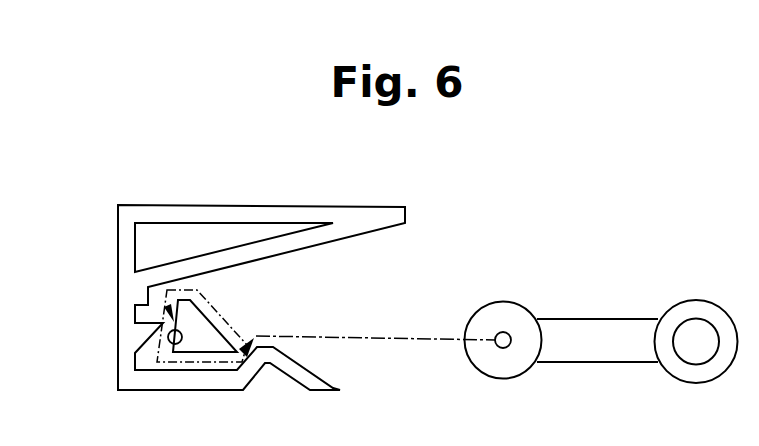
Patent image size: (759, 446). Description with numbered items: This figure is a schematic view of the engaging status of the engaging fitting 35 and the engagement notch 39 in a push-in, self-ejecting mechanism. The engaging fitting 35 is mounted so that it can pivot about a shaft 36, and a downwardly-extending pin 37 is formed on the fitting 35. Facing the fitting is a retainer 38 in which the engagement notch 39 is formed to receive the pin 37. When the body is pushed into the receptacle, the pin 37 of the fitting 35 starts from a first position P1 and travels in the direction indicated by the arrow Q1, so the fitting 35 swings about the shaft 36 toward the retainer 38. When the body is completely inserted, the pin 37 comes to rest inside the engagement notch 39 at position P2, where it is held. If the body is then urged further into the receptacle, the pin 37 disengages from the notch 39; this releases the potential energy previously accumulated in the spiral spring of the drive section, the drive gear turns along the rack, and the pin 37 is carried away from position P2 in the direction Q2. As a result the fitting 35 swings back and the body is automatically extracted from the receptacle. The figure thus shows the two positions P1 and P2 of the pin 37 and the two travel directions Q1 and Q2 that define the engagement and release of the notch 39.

The engaging fitting 35 is at (593, 318).
The shaft 36 is at (690, 317).
The pin 37 is at (502, 333).
The retainer 38 is at (277, 207).
The engagement notch 39 is at (138, 312).
The first position P1 is at (503, 377).
The position P2 is at (182, 342).
The direction Q1 is at (326, 335).
The direction Q2 is at (175, 345).